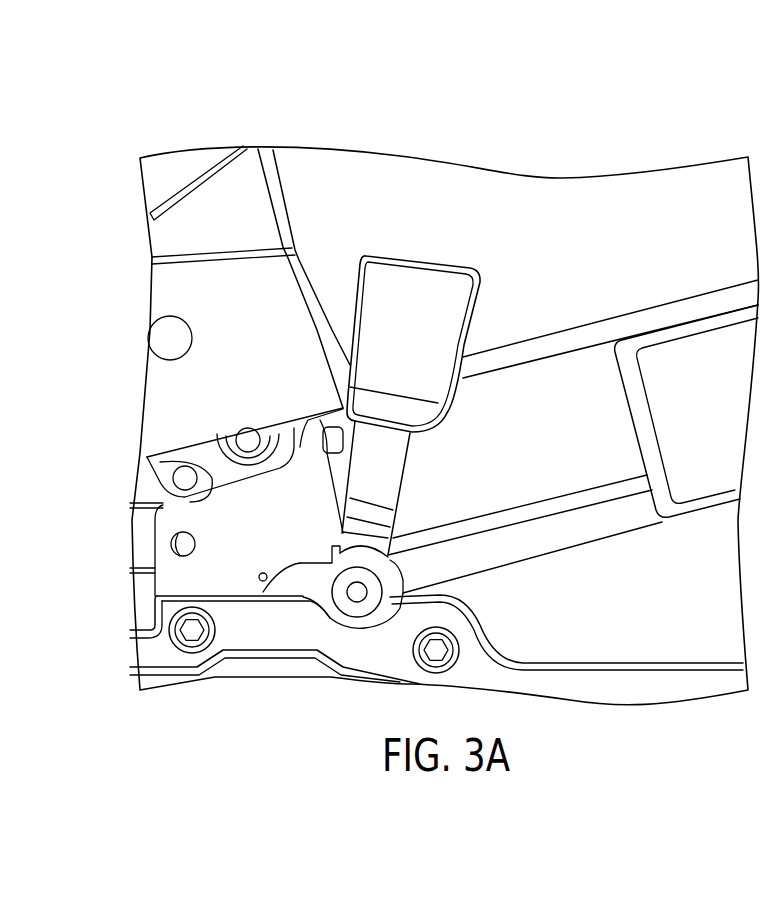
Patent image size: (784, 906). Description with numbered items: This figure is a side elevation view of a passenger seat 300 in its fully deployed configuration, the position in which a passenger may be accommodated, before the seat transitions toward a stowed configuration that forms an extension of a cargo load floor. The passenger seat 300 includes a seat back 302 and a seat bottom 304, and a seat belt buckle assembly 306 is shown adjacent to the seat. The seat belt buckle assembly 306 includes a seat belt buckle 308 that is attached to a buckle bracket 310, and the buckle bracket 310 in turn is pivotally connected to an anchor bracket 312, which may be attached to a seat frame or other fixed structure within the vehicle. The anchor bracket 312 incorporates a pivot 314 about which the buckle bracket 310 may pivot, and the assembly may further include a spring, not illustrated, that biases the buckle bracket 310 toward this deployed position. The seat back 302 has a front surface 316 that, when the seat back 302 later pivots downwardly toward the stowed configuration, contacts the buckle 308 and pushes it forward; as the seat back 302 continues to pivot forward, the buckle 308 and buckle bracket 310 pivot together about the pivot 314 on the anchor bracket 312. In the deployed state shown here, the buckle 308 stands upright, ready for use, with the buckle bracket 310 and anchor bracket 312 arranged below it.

The passenger seat 300 is at (344, 125).
The seat back 302 is at (177, 283).
The seat bottom 304 is at (573, 382).
The seat belt buckle assembly 306 is at (310, 399).
The seat belt buckle 308 is at (420, 262).
The buckle bracket 310 is at (372, 480).
The anchor bracket 312 is at (303, 585).
The pivot 314 is at (357, 592).
The front surface 316 is at (290, 215).